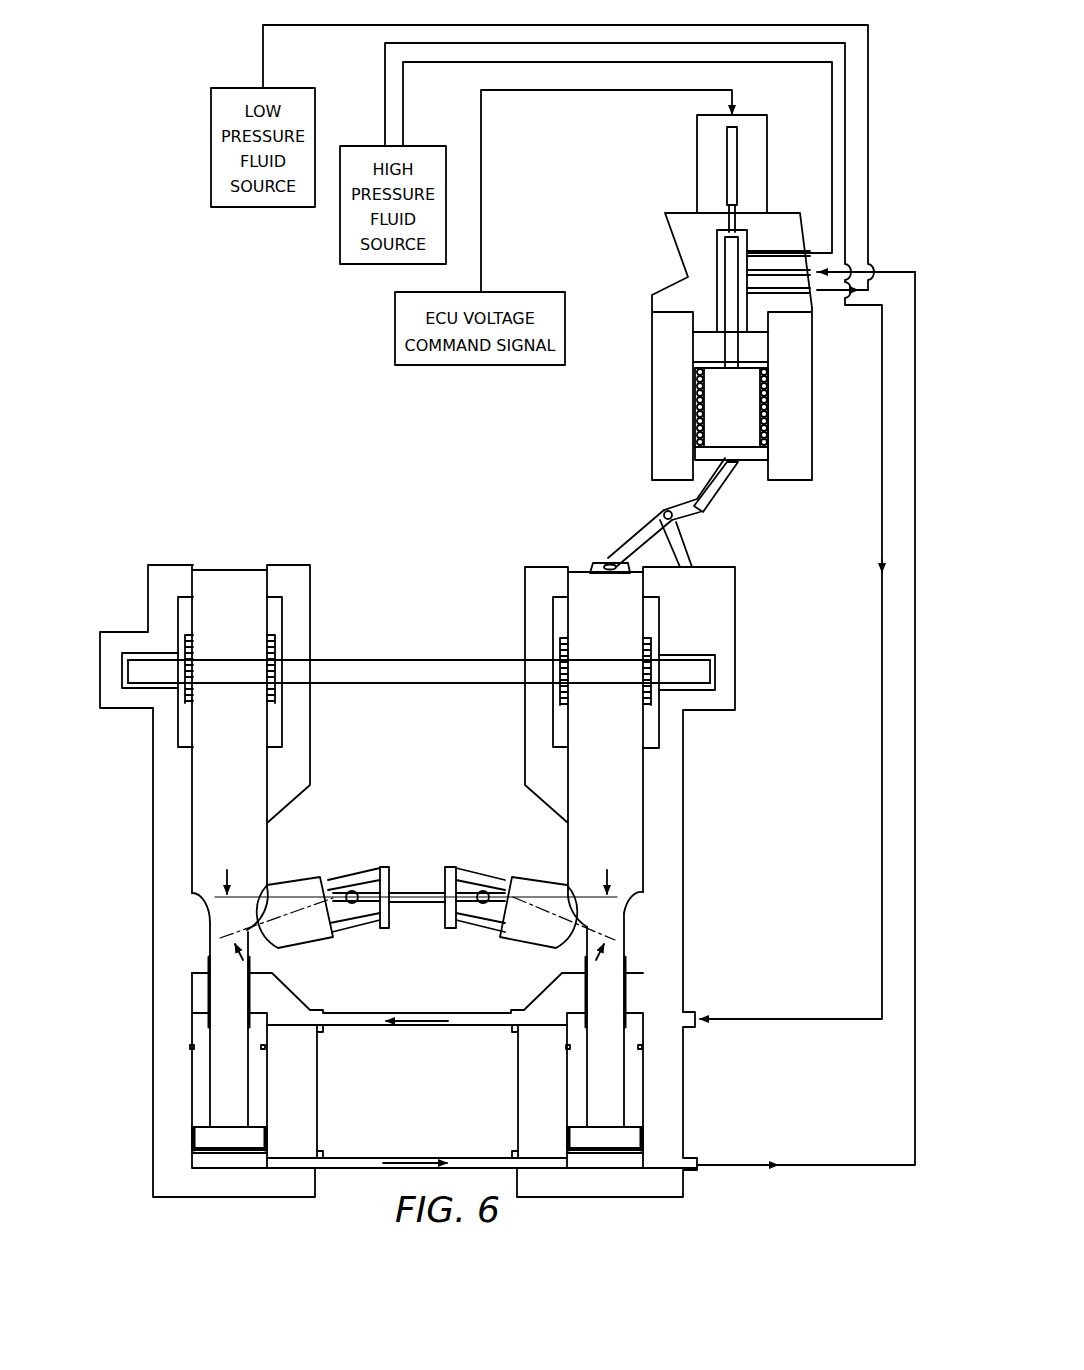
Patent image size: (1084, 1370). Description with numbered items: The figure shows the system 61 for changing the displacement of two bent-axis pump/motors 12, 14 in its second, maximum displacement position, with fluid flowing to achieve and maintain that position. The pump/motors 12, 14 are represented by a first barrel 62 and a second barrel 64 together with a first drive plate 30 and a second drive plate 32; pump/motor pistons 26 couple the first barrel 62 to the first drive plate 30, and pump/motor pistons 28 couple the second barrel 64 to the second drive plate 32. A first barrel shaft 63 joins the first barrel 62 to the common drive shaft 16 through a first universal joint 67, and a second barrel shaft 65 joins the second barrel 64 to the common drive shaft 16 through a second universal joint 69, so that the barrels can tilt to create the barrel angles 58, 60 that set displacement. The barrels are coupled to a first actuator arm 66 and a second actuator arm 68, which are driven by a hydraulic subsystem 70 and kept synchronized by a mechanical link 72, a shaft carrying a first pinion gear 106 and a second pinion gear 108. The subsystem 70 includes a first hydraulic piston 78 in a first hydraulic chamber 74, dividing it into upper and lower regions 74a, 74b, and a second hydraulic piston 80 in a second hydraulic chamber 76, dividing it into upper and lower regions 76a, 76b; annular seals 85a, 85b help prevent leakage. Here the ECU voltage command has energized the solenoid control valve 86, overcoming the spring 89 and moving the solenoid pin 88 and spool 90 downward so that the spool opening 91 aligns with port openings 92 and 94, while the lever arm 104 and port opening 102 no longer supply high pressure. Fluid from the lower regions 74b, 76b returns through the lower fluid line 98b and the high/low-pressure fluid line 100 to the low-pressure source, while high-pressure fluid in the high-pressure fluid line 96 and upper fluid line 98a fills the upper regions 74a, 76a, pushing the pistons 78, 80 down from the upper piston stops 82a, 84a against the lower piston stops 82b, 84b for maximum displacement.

The pump/motor 12 is at (361, 815).
The pump/motor 14 is at (460, 815).
The common drive shaft 16 is at (413, 903).
The pump/motor pistons 26 is at (333, 880).
The pump/motor pistons 28 is at (497, 880).
The first drive plate 30 is at (385, 867).
The second drive plate 32 is at (451, 867).
The barrel angle 58 is at (274, 915).
The barrel angle 60 is at (566, 915).
The system 61 is at (297, 297).
The first barrel 62 is at (310, 947).
The first barrel shaft 63 is at (327, 890).
The second barrel 64 is at (522, 947).
The second barrel shaft 65 is at (502, 900).
The first actuator arm 66 is at (210, 938).
The first universal joint 67 is at (352, 880).
The second actuator arm 68 is at (630, 945).
The second universal joint 69 is at (483, 893).
The hydraulic subsystem 70 is at (742, 763).
The mechanical link 72 is at (420, 658).
The first hydraulic chamber 74 is at (183, 1092).
The upper hydraulic fluid region 74a is at (195, 1027).
The lower hydraulic fluid region 74b is at (213, 1163).
The second hydraulic chamber 76 is at (652, 1112).
The upper hydraulic fluid region 76a is at (632, 1037).
The lower hydraulic fluid region 76b is at (635, 1162).
The first hydraulic piston 78 is at (222, 1133).
The second hydraulic piston 80 is at (600, 1140).
The upper piston stop 82a is at (262, 1048).
The lower piston stop 82b is at (258, 1160).
The upper piston stop 84a is at (638, 1050).
The lower piston stop 84b is at (583, 1153).
The annular seal 85a is at (247, 993).
The annular seal 85b is at (265, 1138).
The solenoid control valve 86 is at (716, 208).
The solenoid pin 88 is at (735, 147).
The spring 89 is at (698, 377).
The spool 90 is at (700, 297).
The spool opening 91 is at (718, 263).
The port opening 92 is at (773, 267).
The port opening 94 is at (777, 293).
The high-pressure fluid line 96 is at (882, 457).
The upper fluid line 98a is at (413, 1027).
The lower fluid line 98b is at (408, 1170).
The high/low-pressure fluid line 100 is at (915, 343).
The port opening 102 is at (770, 247).
The lever arm 104 is at (636, 512).
The first pinion gear 106 is at (187, 645).
The second pinion gear 108 is at (650, 648).